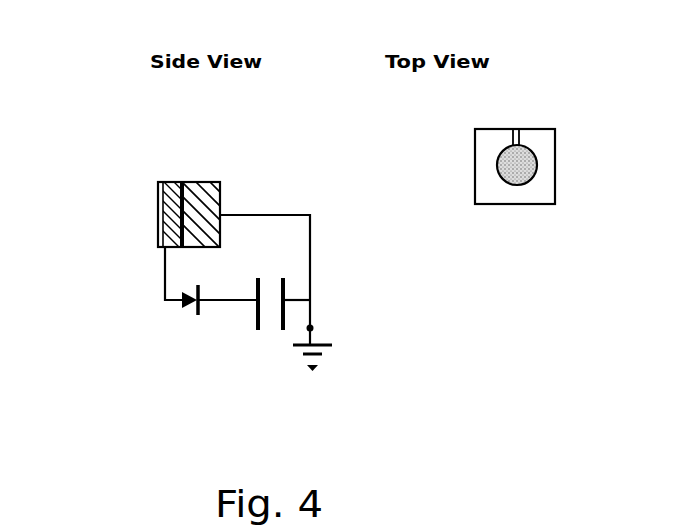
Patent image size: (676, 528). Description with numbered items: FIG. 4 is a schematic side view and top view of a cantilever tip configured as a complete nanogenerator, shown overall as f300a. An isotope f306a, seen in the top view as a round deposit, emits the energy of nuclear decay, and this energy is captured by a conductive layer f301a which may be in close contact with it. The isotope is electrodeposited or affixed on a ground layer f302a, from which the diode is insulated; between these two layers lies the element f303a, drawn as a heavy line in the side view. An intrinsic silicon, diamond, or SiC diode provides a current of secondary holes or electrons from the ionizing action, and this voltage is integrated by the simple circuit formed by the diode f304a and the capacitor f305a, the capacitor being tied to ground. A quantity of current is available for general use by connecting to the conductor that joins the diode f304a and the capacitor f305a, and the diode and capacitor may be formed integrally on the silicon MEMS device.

The piezoelectric transducer assembly f300a is at (233, 236).
The conductive layer f301a is at (148, 215).
The ground layer f302a is at (227, 187).
The electrode f303a is at (182, 183).
The diode f304a is at (177, 309).
The capacitor f305a is at (270, 337).
The isotope f306a is at (497, 165).